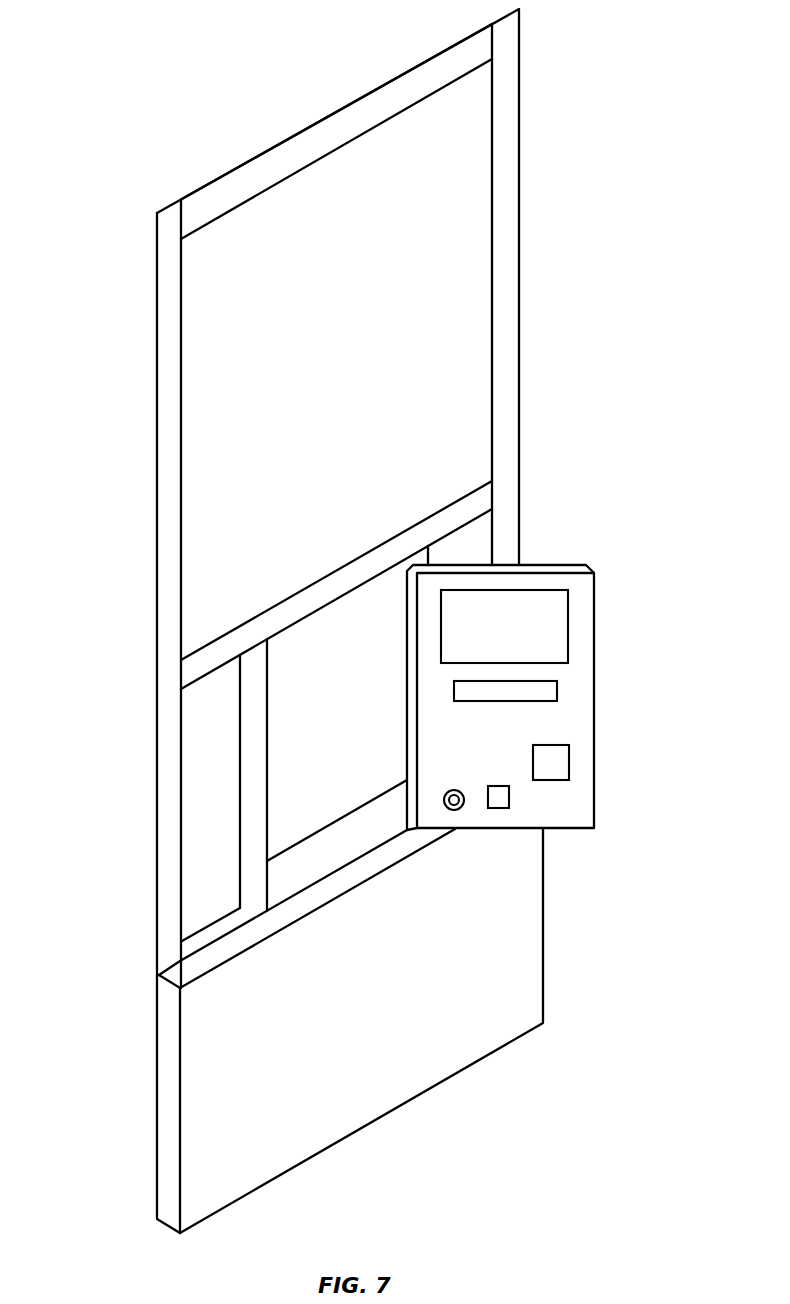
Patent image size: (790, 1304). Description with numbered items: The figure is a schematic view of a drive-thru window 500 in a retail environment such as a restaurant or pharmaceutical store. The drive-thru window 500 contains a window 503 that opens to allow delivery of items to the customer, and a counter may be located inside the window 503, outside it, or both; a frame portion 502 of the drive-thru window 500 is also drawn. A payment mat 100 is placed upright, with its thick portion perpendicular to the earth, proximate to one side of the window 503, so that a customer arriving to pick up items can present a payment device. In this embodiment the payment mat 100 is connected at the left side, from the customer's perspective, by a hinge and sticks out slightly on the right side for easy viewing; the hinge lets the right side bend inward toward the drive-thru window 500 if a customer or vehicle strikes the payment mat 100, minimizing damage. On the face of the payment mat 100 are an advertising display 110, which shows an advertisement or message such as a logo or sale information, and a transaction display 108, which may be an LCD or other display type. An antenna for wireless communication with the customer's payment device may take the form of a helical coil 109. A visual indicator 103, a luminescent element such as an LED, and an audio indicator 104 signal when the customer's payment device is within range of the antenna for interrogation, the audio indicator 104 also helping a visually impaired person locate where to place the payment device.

The drive-thru window 500 is at (522, 358).
The door frame / sill 502 is at (287, 875).
The window 503 is at (287, 757).
The payment mat 100 is at (597, 576).
The advertising display 110 is at (568, 615).
The transaction display 108 is at (557, 685).
The helical coil 109 is at (569, 758).
The visual indicator 103 is at (509, 799).
The audio indicator 104 is at (462, 805).